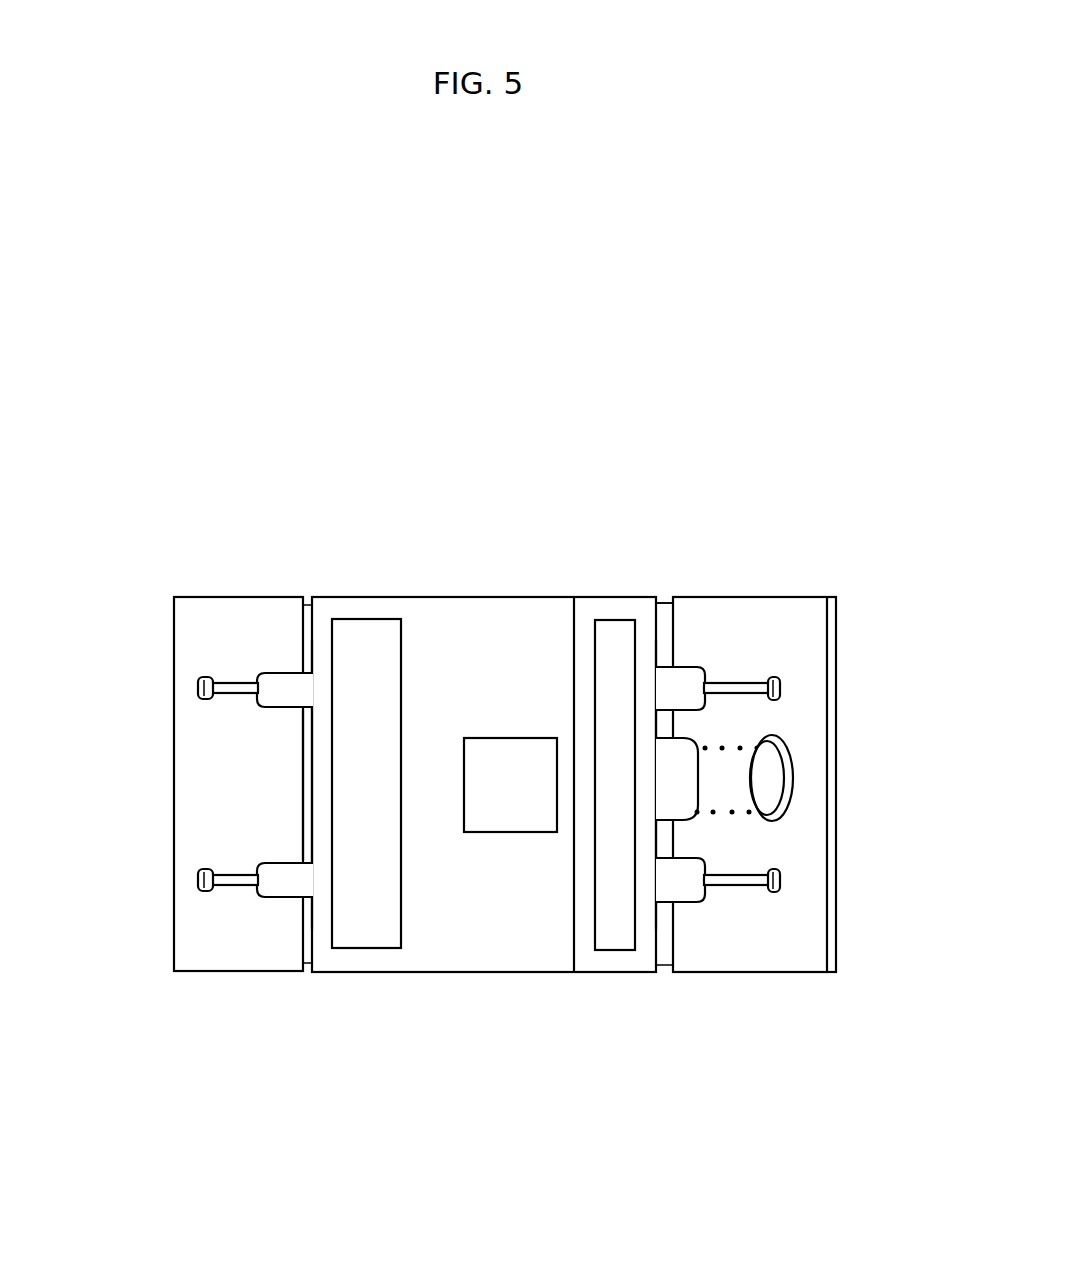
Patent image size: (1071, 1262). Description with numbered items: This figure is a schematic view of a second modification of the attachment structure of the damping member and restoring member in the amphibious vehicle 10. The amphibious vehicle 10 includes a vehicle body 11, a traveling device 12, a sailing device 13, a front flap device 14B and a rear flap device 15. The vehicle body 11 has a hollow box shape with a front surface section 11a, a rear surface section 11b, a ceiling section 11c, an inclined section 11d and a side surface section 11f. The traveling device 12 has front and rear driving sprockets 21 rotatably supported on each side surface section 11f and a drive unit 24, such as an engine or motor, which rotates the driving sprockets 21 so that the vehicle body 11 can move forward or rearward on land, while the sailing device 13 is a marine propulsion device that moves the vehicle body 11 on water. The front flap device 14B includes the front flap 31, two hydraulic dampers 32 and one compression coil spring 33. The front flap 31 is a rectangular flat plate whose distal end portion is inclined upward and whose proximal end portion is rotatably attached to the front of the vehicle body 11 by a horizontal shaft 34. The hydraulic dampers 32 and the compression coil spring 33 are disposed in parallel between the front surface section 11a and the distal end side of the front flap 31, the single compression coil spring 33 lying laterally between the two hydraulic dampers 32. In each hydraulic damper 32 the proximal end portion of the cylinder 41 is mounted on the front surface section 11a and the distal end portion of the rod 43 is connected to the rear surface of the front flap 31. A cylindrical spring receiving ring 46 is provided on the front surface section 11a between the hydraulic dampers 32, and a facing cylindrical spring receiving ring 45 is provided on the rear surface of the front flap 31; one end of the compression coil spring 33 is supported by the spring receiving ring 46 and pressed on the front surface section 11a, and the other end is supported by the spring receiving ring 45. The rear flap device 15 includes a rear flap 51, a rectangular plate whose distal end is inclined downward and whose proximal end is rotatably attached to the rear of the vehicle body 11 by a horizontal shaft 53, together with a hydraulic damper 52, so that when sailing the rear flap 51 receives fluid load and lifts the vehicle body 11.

The amphibious vehicle 10 is at (310, 510).
The vehicle body 11 is at (497, 597).
The front surface section 11a is at (657, 927).
The rear surface section 11b is at (307, 928).
The ceiling section 11c is at (445, 925).
The inclined section 11d is at (583, 605).
The side surface section 11f is at (440, 597).
The traveling device 12 is at (497, 832).
The sailing device 13 is at (380, 617).
The front flap device 14B is at (853, 745).
The rear flap device 15 is at (158, 786).
The driving sprocket 21 is at (612, 637).
The drive unit 24 is at (495, 738).
The front flap 31 is at (808, 612).
The hydraulic damper 32 is at (680, 663).
The compression coil spring 33 is at (757, 748).
The horizontal shaft 34 is at (667, 618).
The cylinder 41 is at (697, 670).
The rod 43 is at (737, 688).
The spring receiving ring 45 is at (792, 786).
The spring receiving ring 46 is at (668, 800).
The rear flap 51 is at (197, 845).
The hydraulic damper 52 is at (272, 690).
The horizontal shaft 53 is at (305, 750).